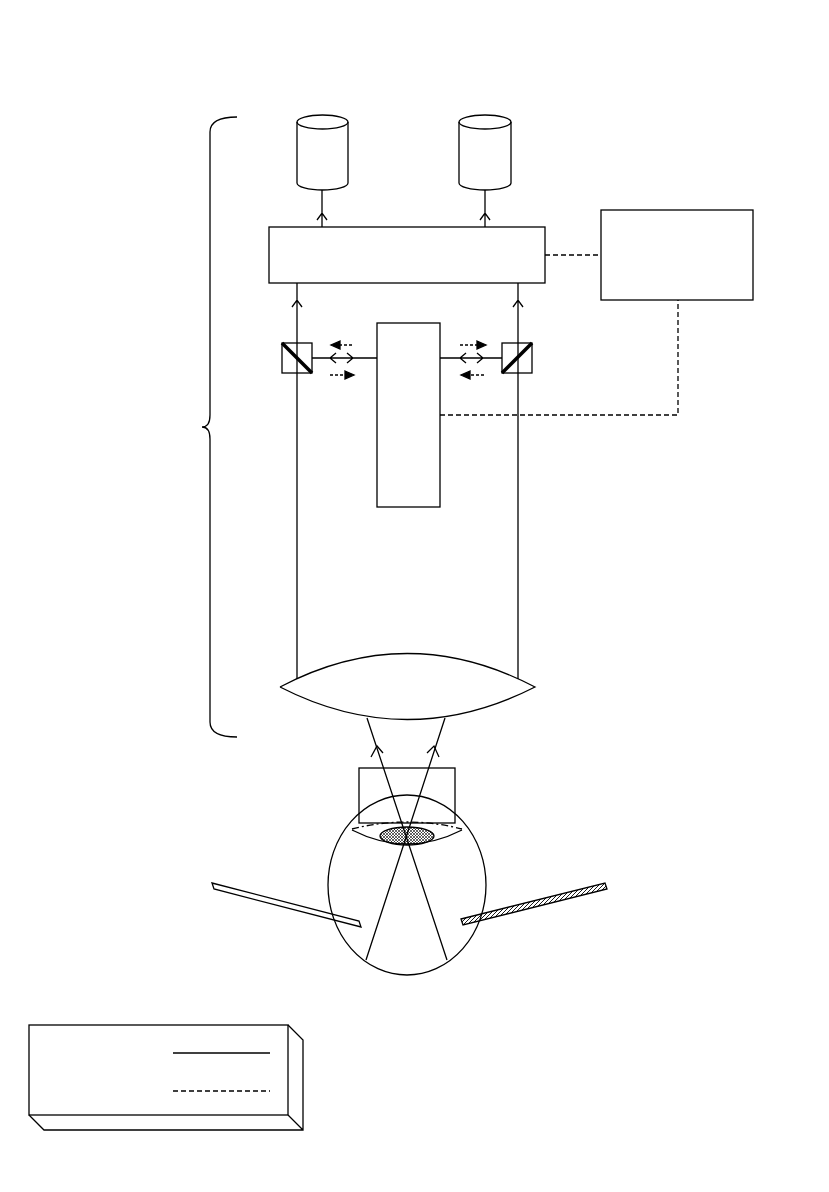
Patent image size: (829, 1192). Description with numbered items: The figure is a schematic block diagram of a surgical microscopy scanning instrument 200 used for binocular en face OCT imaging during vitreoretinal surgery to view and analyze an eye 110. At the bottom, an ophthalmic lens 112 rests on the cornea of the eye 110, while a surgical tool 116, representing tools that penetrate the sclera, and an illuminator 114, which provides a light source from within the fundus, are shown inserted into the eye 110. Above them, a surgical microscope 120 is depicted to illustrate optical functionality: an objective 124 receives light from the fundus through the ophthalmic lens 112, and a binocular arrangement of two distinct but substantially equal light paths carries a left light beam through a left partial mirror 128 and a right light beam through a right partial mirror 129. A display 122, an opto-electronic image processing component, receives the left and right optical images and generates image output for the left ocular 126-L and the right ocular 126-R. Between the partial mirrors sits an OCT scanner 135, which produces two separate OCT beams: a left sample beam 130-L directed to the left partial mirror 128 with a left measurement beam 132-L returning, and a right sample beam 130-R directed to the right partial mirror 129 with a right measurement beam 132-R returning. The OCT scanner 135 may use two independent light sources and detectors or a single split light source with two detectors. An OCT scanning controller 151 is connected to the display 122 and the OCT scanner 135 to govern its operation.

The surgical microscopy scanning instrument 200 is at (95, 33).
The surgical microscope 120 is at (200, 428).
The left ocular 126-L is at (322, 152).
The right ocular 126-R is at (485, 152).
The display 122 is at (407, 255).
The OCT scanning controller 151 is at (677, 255).
The left partial mirror 128 is at (287, 346).
The right partial mirror 129 is at (527, 346).
The left sample beam 130-L is at (339, 344).
The right sample beam 130-R is at (472, 344).
The left measurement beam 132-L is at (338, 377).
The right measurement beam 132-R is at (466, 377).
The OCT scanner 135 is at (406, 431).
The objective 124 is at (407, 687).
The ophthalmic lens 112 is at (359, 790).
The eye 110 is at (478, 848).
The illuminator 114 is at (249, 888).
The surgical tool 116 is at (587, 886).